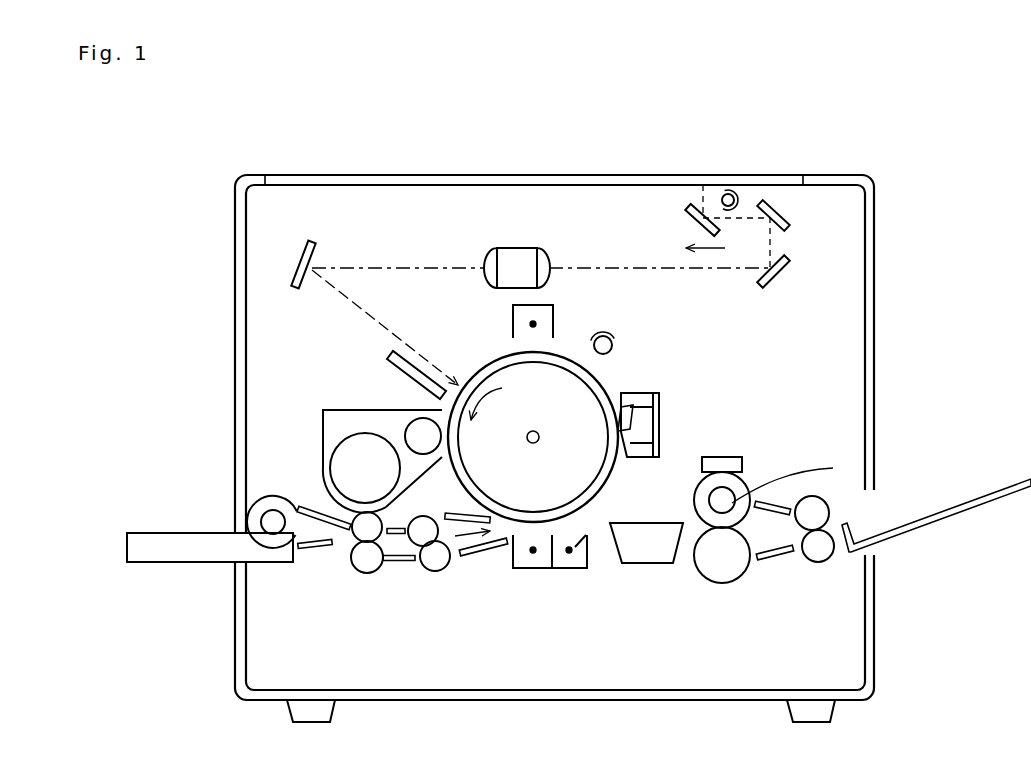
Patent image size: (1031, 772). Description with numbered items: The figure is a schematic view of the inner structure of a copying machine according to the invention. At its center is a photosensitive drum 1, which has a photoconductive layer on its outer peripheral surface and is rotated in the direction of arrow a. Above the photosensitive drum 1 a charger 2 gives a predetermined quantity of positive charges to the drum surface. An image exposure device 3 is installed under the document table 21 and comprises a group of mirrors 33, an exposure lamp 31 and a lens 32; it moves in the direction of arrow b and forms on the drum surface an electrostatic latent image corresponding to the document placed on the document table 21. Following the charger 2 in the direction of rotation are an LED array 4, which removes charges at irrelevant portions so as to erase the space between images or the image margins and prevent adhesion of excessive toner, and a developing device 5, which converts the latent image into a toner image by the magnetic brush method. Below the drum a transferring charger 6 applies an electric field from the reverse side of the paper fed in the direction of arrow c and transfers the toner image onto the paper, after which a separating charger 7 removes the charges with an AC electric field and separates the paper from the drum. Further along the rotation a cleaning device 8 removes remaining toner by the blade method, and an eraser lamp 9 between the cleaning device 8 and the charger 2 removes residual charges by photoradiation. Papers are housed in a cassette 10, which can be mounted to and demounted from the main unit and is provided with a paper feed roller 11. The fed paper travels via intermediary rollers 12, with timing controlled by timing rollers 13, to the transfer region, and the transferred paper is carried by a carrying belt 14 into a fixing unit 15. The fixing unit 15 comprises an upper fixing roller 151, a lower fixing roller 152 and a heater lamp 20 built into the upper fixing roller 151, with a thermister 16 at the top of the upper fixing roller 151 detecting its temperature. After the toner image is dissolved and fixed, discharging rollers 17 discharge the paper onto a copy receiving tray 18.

The photosensitive drum 1 is at (490, 353).
The charger 2 is at (553, 305).
The image exposure device 3 is at (404, 229).
The LED array 4 is at (398, 357).
The developing device 5 is at (345, 410).
The transferring charger 6 is at (530, 569).
The separating charger 7 is at (568, 569).
The cleaning device 8 is at (660, 425).
The eraser lamp 9 is at (617, 344).
The cassette 10 is at (180, 565).
The paper feed roller 11 is at (273, 496).
The intermediary rollers 12 is at (362, 574).
The timing rollers 13 is at (435, 572).
The carrying belt 14 is at (650, 564).
The fixing unit 15 is at (735, 530).
The upper fixing roller 151 is at (695, 492).
The lower fixing roller 152 is at (735, 584).
The thermister 16 is at (730, 457).
The discharging rollers 17 is at (820, 562).
The copy receiving tray 18 is at (1012, 505).
The heater lamp 20 is at (792, 475).
The document table 21 is at (487, 175).
The exposure lamp 31 is at (728, 192).
The lens 32 is at (515, 248).
The group of mirrors 33 is at (800, 241).